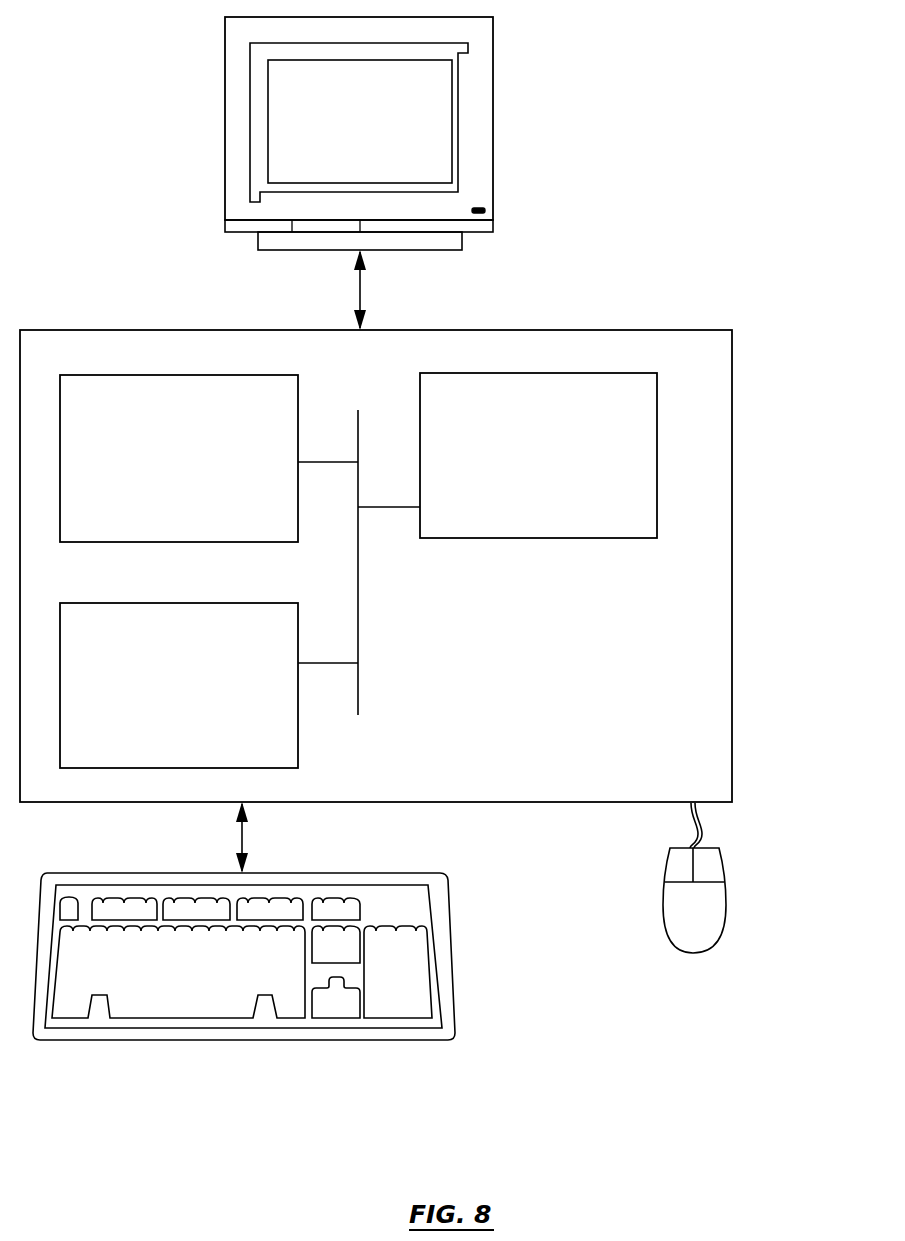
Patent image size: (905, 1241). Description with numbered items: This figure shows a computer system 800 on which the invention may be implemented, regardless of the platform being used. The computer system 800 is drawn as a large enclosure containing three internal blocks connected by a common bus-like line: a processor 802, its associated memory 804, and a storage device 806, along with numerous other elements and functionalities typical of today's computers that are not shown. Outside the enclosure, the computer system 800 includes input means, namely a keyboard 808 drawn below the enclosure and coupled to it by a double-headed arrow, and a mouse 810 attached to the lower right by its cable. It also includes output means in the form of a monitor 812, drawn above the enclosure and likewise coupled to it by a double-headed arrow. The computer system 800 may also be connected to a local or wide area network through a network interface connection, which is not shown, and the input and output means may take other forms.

The computer system 800 is at (750, 177).
The processor 802 is at (516, 470).
The associated memory 804 is at (158, 471).
The storage device 806 is at (155, 700).
The keyboard 808 is at (149, 999).
The mouse 810 is at (671, 925).
The monitor 812 is at (338, 140).